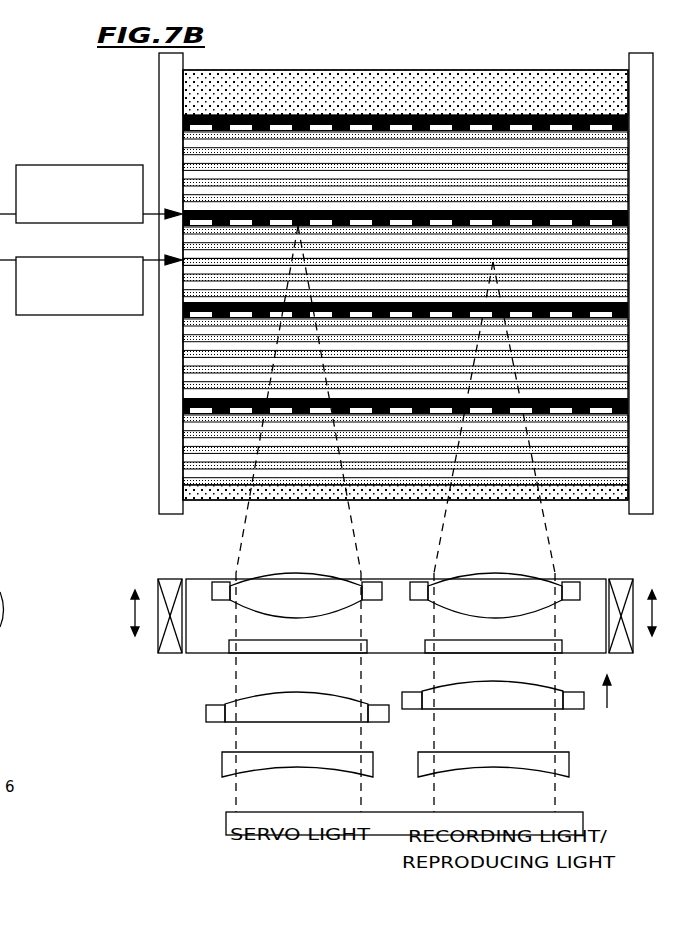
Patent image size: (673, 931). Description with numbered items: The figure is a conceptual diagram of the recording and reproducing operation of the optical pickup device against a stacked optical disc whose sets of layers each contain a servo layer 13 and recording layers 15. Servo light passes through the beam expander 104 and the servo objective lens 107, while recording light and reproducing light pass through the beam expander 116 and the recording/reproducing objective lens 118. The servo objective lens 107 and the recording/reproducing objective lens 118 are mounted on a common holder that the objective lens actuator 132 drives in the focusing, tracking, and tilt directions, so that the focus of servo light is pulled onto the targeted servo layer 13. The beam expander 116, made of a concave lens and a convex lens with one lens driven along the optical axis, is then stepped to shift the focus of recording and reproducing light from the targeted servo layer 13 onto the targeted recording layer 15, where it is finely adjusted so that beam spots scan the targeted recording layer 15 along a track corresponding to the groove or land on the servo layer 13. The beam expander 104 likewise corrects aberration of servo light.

The servo layer 13 is at (314, 197).
The recording layer 15 is at (314, 287).
The servo objective lens 107 is at (275, 587).
The recording/reproducing objective lens 118 is at (517, 587).
The beam expander 104 is at (218, 733).
The beam expander 116 is at (572, 732).
The objective lens actuator 132 is at (0, 677).